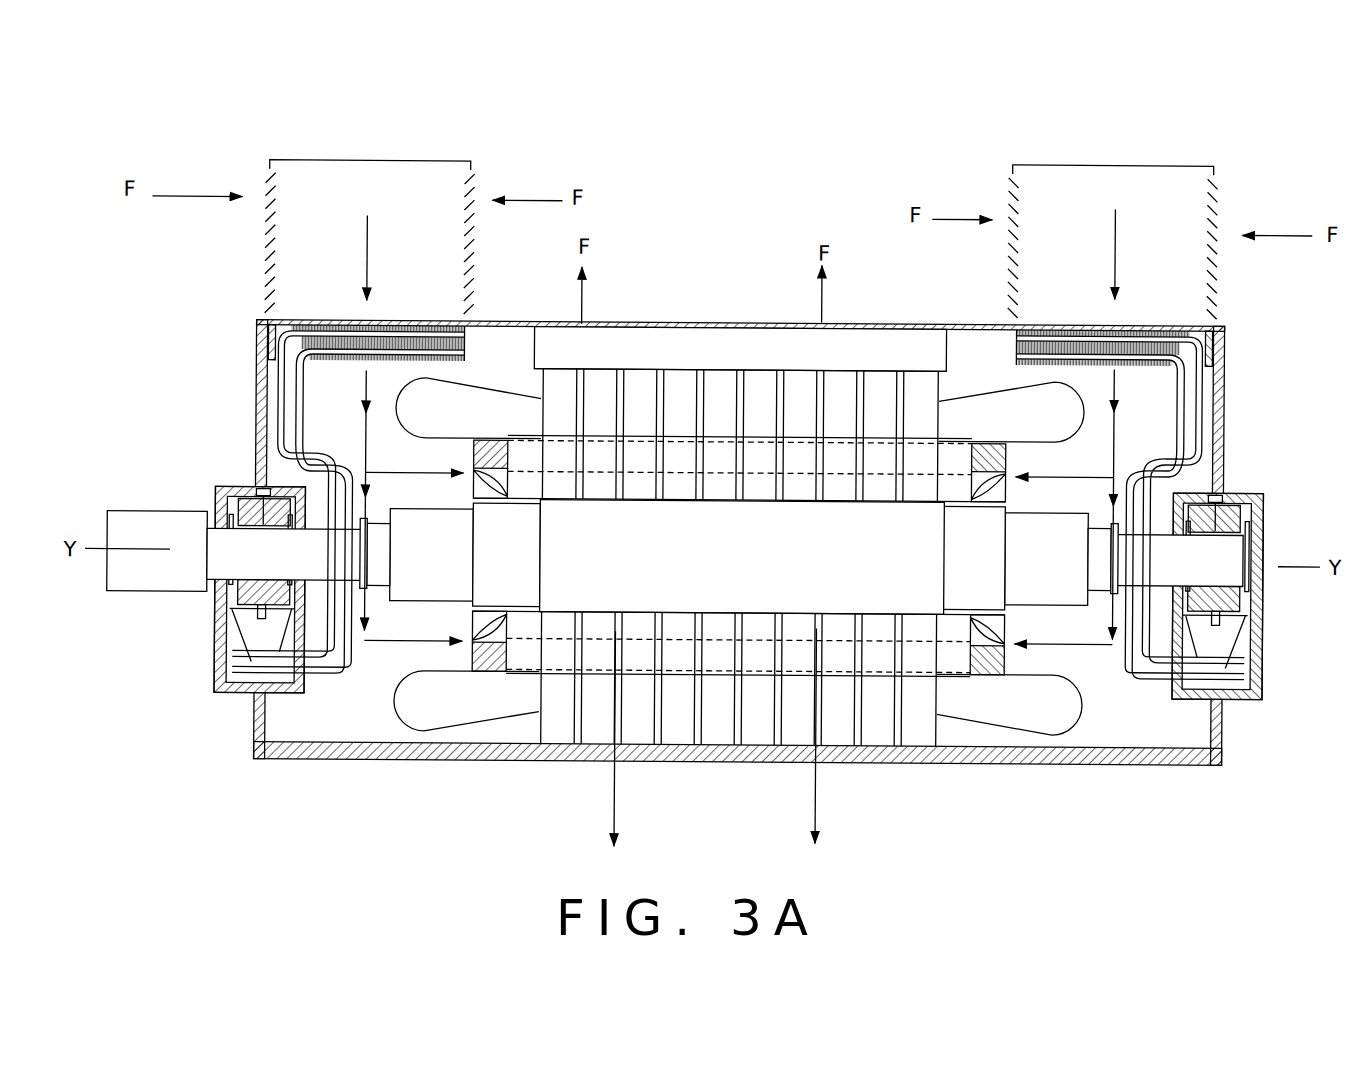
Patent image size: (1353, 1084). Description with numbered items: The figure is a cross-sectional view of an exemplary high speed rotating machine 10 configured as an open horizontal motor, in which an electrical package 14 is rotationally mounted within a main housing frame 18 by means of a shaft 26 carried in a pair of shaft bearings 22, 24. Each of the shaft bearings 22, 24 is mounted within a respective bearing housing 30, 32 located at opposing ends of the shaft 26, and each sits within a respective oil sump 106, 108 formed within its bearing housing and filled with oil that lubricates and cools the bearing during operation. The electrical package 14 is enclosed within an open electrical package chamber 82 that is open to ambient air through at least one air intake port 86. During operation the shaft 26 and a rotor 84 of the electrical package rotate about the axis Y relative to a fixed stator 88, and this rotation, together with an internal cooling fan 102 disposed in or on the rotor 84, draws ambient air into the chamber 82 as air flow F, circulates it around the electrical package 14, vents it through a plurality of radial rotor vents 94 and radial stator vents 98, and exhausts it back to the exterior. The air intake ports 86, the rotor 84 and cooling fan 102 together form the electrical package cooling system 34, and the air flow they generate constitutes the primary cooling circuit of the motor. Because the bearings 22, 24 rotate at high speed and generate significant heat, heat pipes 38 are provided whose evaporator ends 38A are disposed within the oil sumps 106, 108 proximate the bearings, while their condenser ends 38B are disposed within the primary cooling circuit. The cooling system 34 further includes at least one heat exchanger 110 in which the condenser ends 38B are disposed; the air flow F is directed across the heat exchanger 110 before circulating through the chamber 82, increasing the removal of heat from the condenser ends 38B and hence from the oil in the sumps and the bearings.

The high speed rotating machine 10 is at (895, 125).
The electrical package 14 is at (745, 562).
The main housing frame 18 is at (925, 762).
The shaft bearing 22 is at (1245, 525).
The shaft bearing 24 is at (245, 500).
The shaft 26 is at (317, 535).
The bearing housing 30 is at (1260, 592).
The bearing housing 32 is at (225, 608).
The electrical package cooling system 34 is at (502, 260).
The heat pipes 38 is at (295, 405).
The evaporator ends 38A is at (240, 667).
The condenser ends 38B is at (465, 333).
The open electrical package chamber 82 is at (330, 710).
The rotor 84 is at (545, 655).
The air intake port 86 is at (308, 256).
The stator 88 is at (600, 722).
The radial rotor vents 94 is at (689, 460).
The radial stator vents 98 is at (643, 400).
The internal cooling fan 102 is at (490, 484).
The oil sump 106 is at (1220, 645).
The oil sump 108 is at (255, 632).
The heat exchanger 110 is at (258, 330).